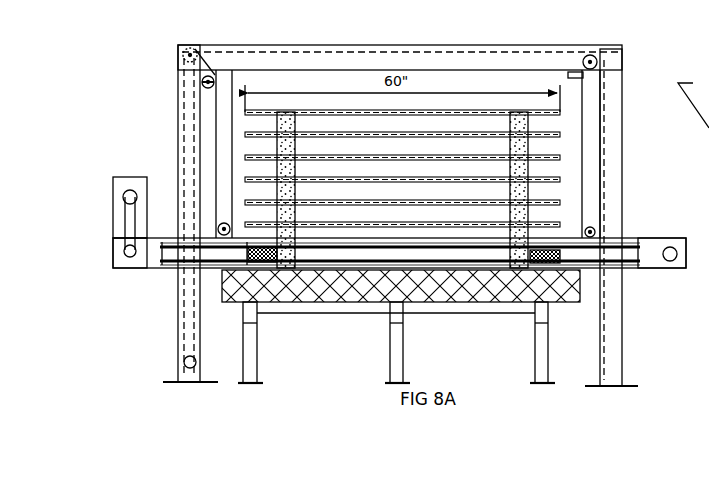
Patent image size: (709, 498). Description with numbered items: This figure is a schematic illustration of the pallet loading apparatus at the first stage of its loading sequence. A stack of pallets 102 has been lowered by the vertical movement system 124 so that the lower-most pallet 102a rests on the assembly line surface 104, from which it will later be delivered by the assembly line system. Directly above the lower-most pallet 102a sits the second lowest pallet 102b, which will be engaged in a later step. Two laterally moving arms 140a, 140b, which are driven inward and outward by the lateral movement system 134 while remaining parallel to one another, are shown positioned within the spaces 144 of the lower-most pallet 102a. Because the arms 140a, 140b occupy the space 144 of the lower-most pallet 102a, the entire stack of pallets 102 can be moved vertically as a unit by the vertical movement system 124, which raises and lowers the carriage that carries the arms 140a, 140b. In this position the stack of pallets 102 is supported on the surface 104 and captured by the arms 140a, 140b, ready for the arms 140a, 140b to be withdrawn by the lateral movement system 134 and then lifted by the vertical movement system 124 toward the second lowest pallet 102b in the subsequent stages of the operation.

The stack of pallets 102 is at (462, 144).
The lower-most pallet 102a is at (530, 266).
The second lowest pallet 102b is at (528, 240).
The assembly line surface 104 is at (404, 294).
The vertical movement system 124 is at (177, 358).
The lateral movement system 134 is at (137, 177).
The laterally moving arm 140a is at (264, 256).
The laterally moving arm 140b is at (554, 266).
The space 144 is at (548, 224).